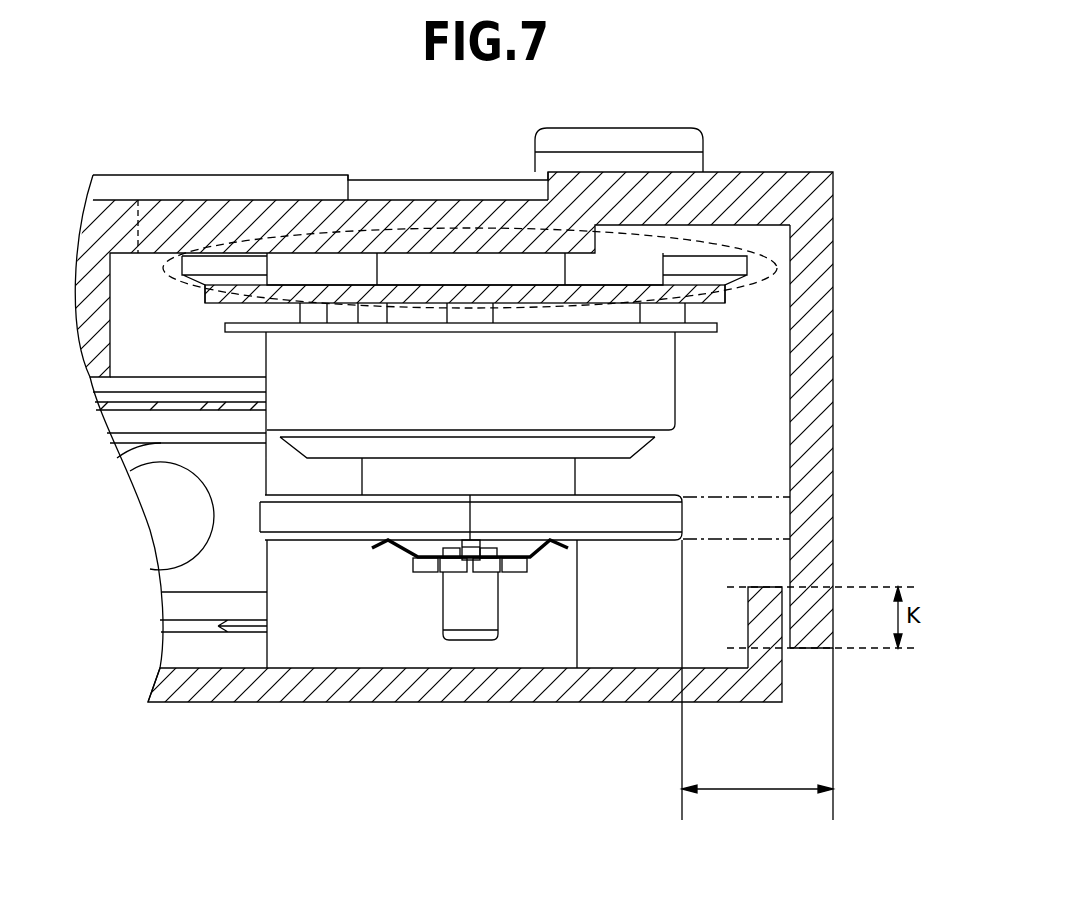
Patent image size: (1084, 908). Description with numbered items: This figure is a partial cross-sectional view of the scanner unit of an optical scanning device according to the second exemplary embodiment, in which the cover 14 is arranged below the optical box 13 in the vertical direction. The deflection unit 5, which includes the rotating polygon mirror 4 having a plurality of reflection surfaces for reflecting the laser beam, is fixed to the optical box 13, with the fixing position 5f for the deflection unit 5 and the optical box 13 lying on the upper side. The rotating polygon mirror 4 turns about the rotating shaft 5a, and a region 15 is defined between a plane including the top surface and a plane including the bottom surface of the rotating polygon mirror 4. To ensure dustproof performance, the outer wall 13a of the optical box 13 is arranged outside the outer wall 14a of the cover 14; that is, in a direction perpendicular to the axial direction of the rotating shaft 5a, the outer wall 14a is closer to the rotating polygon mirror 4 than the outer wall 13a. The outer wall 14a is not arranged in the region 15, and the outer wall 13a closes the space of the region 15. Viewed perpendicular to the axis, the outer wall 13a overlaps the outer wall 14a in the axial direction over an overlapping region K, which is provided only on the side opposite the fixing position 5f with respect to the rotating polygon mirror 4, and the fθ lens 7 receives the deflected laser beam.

The rotating polygon mirror 4 is at (307, 517).
The deflection unit 5 is at (347, 363).
The rotating shaft 5a is at (468, 617).
The fixing position 5f is at (728, 247).
The optical box 13 is at (767, 188).
The outer wall of the optical box 13a is at (813, 428).
The cover 14 is at (555, 687).
The outer wall of the cover 14a is at (772, 670).
The region 15 is at (748, 518).
The fθ lens 7 is at (757, 680).